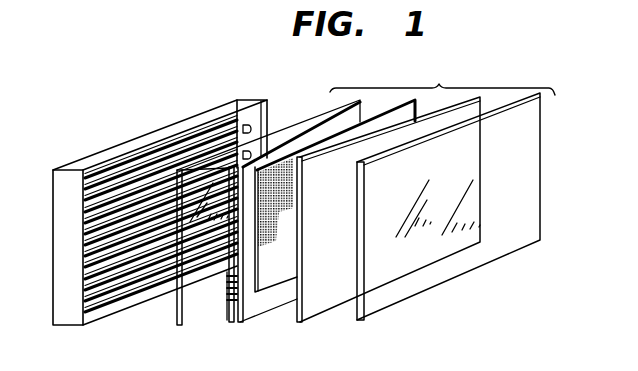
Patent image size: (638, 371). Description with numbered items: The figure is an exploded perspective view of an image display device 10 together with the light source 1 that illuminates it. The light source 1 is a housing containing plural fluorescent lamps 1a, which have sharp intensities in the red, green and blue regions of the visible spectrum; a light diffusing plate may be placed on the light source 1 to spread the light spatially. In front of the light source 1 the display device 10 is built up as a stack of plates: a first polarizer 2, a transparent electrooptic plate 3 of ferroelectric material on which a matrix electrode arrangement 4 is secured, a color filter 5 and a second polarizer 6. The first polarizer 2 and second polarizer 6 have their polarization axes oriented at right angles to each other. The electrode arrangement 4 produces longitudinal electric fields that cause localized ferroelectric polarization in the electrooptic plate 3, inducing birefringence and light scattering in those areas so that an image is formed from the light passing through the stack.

The light source 1 is at (72, 326).
The fluorescent lamps 1a is at (118, 174).
The first polarizer 2 is at (178, 326).
The transparent electrooptic plate 3 is at (243, 322).
The matrix electrode arrangement 4 is at (267, 289).
The color filter 5 is at (310, 319).
The second polarizer 6 is at (371, 321).
The image display device 10 is at (442, 76).